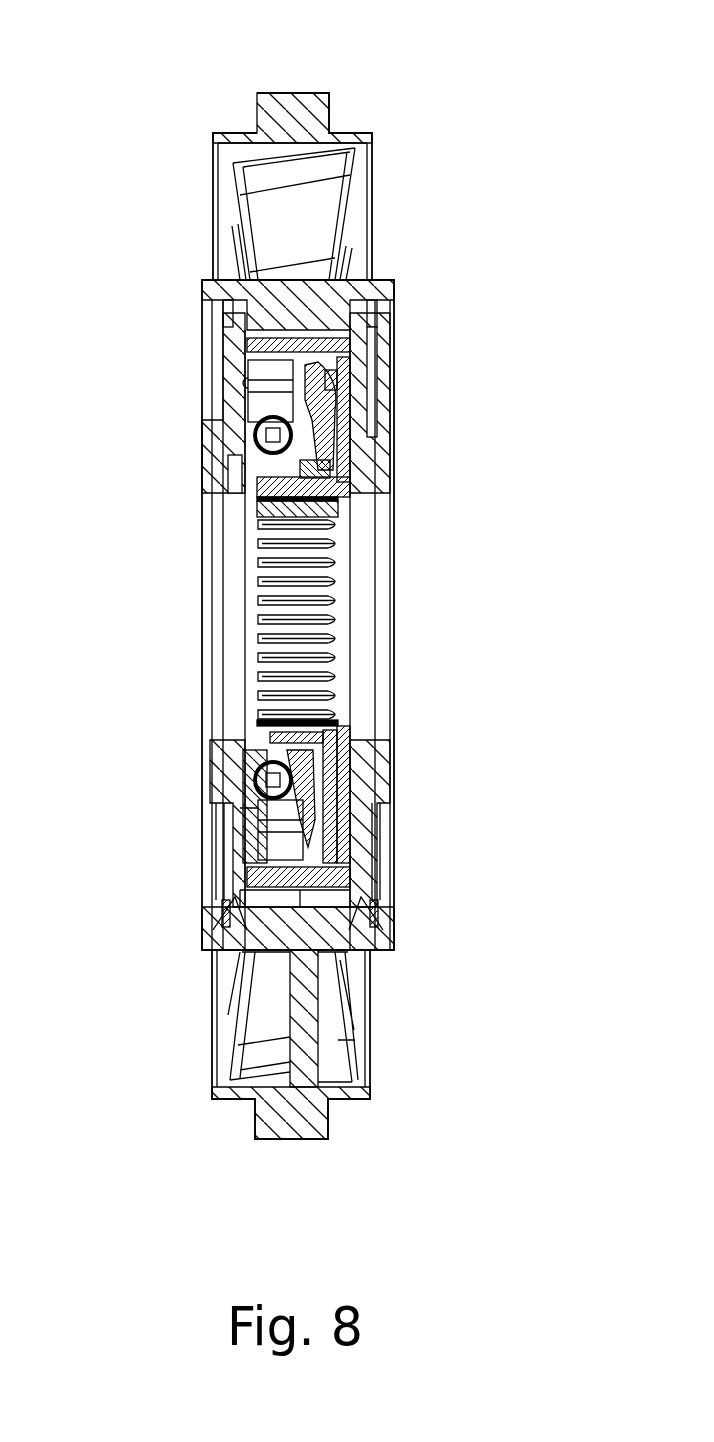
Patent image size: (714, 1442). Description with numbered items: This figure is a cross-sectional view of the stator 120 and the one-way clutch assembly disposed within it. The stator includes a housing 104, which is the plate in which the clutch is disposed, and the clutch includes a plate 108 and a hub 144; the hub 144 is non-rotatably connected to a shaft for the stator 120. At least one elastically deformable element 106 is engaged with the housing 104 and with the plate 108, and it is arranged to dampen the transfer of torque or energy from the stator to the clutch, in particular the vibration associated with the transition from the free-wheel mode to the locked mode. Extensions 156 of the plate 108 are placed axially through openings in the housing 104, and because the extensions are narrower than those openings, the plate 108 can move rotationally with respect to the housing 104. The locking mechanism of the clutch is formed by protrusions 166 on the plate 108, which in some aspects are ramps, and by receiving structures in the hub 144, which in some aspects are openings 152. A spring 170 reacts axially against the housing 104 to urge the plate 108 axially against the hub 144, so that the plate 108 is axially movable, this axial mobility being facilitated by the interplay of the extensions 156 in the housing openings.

The stator 120 is at (150, 137).
The openings 152 is at (342, 398).
The protrusions 166 is at (333, 415).
The spring 170 is at (280, 423).
The hub 144 is at (333, 753).
The elastically deformable element 106 is at (252, 808).
The housing 104 is at (257, 877).
The plate 108 is at (385, 927).
The extensions 156 is at (230, 950).